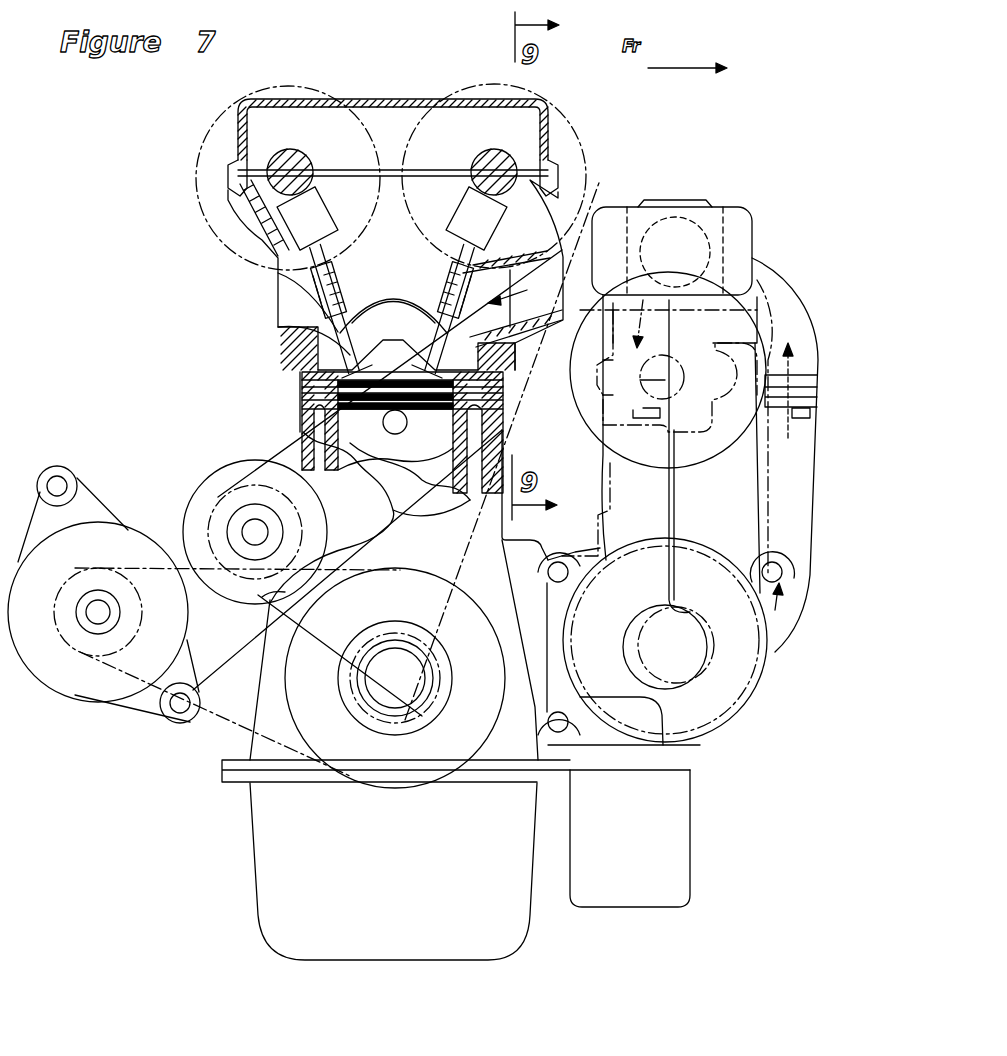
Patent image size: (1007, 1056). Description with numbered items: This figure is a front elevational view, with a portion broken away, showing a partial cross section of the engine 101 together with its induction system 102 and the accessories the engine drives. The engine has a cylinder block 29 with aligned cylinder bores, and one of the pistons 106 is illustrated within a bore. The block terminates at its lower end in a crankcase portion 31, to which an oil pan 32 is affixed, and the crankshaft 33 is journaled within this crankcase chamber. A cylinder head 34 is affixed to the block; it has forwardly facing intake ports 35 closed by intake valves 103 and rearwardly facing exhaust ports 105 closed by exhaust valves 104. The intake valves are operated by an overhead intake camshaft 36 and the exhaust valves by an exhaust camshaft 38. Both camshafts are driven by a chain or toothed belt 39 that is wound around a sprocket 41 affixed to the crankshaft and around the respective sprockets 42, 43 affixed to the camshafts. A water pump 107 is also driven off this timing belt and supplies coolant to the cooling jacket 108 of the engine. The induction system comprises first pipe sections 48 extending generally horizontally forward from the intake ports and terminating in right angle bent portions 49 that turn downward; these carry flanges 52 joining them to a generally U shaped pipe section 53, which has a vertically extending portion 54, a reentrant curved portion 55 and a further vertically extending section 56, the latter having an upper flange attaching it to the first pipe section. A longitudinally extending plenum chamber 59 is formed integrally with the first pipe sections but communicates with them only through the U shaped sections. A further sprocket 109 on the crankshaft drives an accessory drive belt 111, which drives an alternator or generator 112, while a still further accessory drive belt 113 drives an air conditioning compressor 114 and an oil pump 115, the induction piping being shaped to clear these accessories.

The engine 101 is at (408, 55).
The induction system 102 is at (748, 185).
The cylinder block 29 is at (297, 410).
The crankcase portion 31 is at (497, 752).
The oil pan 32 is at (262, 882).
The crankshaft 33 is at (405, 692).
The cylinder head 34 is at (256, 248).
The intake ports 35 is at (476, 332).
The intake camshaft 36 is at (503, 158).
The exhaust camshaft 38 is at (306, 158).
The timing belt 39 is at (588, 180).
The sprocket 41 is at (378, 628).
The sprocket 42 is at (398, 150).
The sprocket 43 is at (380, 100).
The first pipe sections 48 is at (758, 256).
The right angle bent portions 49 is at (798, 322).
The flanges 52 is at (806, 398).
The U shaped pipe section 53 is at (818, 570).
The vertically extending portion 54 is at (812, 515).
The reentrant curved portion 55 is at (768, 642).
The vertically extending section 56 is at (665, 522).
The plenum chamber 59 is at (712, 205).
The intake valves 103 is at (428, 278).
The exhaust valves 104 is at (395, 328).
The exhaust ports 105 is at (276, 300).
The piston 106 is at (340, 450).
The water pump 107 is at (212, 470).
The cooling jacket 108 is at (507, 448).
The sprocket 109 is at (305, 752).
The accessory drive belt 111 is at (208, 703).
The alternator or generator 112 is at (70, 690).
The accessory drive belt 113 is at (725, 728).
The air conditioning compressor 114 is at (693, 743).
The oil pump 115 is at (775, 280).